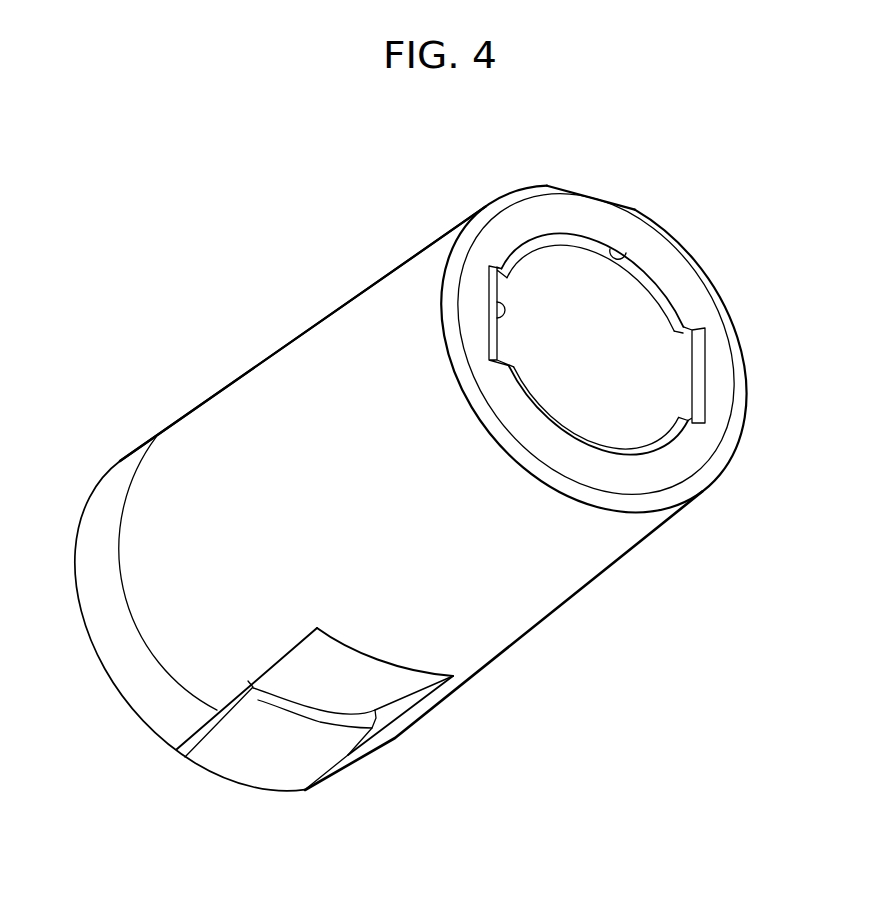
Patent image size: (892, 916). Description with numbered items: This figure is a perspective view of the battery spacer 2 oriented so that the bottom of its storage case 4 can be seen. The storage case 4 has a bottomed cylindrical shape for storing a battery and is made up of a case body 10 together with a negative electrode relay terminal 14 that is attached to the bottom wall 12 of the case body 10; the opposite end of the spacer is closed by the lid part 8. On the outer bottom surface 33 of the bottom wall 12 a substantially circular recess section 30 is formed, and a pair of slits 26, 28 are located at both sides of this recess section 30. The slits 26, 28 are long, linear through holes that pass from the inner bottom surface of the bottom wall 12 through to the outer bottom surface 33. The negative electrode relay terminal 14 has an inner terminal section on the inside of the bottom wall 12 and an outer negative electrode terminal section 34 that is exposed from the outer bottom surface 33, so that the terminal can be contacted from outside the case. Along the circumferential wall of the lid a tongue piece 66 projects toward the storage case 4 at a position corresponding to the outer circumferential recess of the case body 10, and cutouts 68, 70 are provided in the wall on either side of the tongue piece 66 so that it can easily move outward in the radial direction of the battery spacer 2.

The battery spacer 2 is at (454, 183).
The storage case 4 is at (411, 498).
The case body 10 is at (504, 640).
The lid part 8 is at (115, 496).
The bottom wall 12 is at (640, 477).
The negative electrode relay terminal 14 is at (640, 340).
The outer negative electrode terminal section 34 is at (637, 323).
The slit 26 is at (697, 372).
The slit 28 is at (500, 302).
The recess section 30 is at (605, 252).
The outer bottom surface 33 is at (528, 225).
The tongue piece 66 is at (255, 757).
The cutout 68 is at (327, 773).
The cutout 70 is at (203, 733).